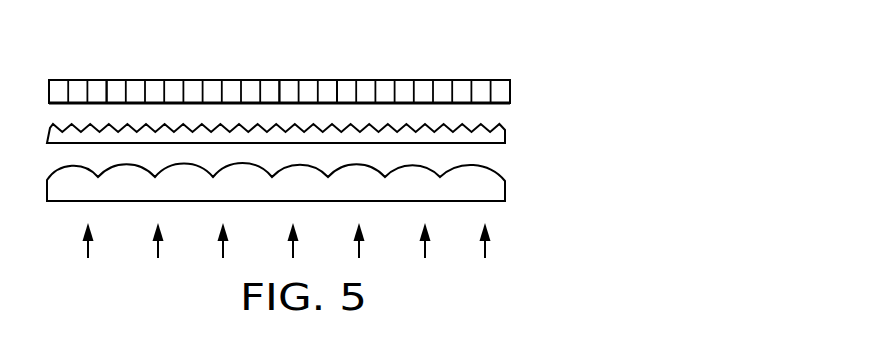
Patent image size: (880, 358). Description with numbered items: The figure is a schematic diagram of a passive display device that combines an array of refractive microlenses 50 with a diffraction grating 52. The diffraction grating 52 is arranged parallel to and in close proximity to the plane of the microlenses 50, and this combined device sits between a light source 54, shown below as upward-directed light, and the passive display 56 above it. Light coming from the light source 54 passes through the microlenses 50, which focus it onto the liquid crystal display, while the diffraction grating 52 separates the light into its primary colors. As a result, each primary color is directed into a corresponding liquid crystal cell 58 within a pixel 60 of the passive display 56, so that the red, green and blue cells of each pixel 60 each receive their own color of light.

The array of refractive microlenses 50 is at (506, 183).
The diffraction grating 52 is at (506, 130).
The light source 54 is at (158, 251).
The passive display 56 is at (523, 72).
The liquid crystal cell 58 is at (83, 47).
The pixel 60 is at (341, 53).